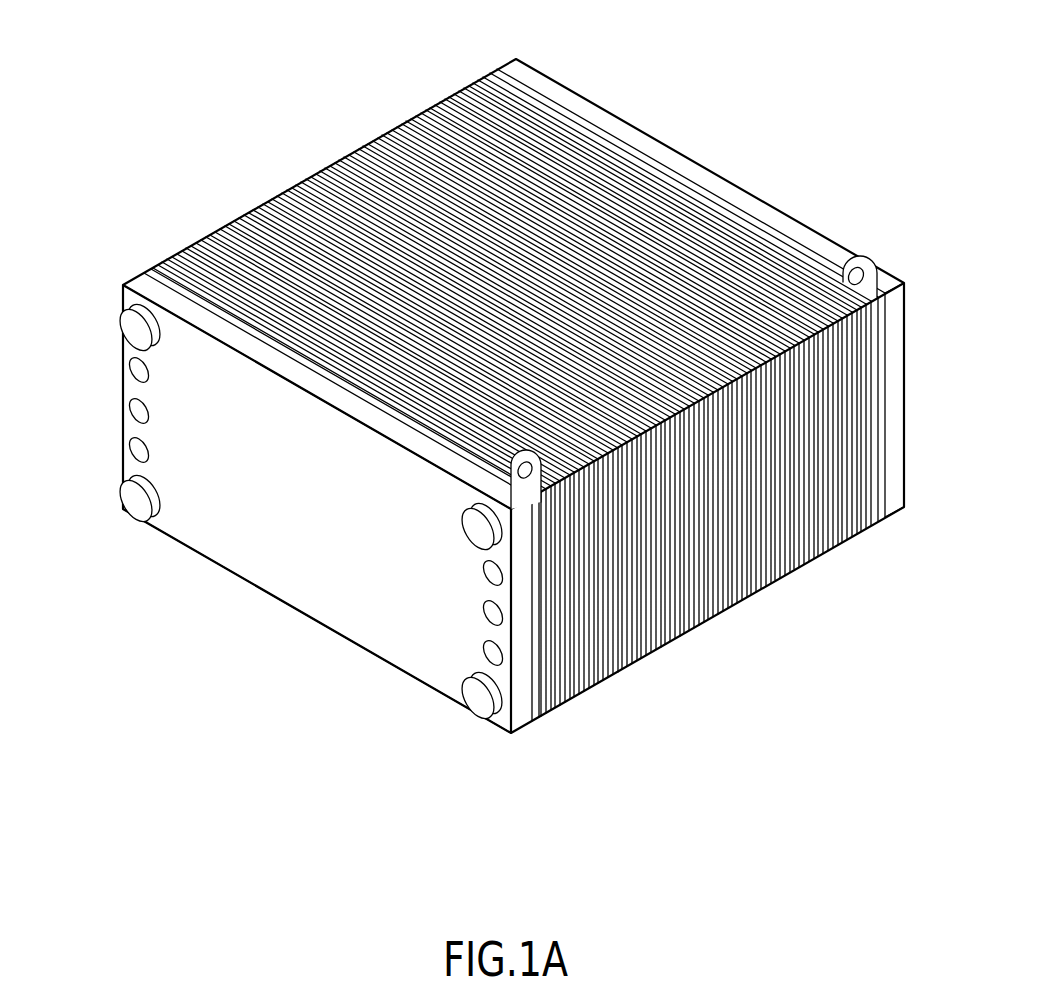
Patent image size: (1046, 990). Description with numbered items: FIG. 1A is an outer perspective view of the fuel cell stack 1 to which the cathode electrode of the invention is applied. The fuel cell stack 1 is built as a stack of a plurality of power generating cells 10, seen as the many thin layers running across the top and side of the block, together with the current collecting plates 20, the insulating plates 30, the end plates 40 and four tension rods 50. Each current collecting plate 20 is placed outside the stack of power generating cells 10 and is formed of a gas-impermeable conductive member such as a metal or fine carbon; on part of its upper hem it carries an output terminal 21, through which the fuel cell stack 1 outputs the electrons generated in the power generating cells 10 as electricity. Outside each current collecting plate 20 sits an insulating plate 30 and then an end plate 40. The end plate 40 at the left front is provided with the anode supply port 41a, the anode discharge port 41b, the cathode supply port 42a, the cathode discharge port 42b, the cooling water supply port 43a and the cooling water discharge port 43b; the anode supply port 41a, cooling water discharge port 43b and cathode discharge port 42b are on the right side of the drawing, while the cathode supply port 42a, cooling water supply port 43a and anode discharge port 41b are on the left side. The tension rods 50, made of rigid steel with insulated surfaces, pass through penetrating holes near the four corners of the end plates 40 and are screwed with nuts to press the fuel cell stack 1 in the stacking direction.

The fuel cell stack 1 is at (507, 392).
The power generating cell 10 is at (690, 625).
The current collecting plate 20 is at (534, 705).
The output terminal 21 is at (518, 440).
The insulating plate 30 is at (528, 714).
The end plate 40 is at (518, 707).
The anode supply port 41a is at (484, 566).
The anode discharge port 41b is at (131, 442).
The cathode supply port 42a is at (131, 362).
The cathode discharge port 42b is at (484, 646).
The cooling water supply port 43a is at (131, 403).
The cooling water discharge port 43b is at (484, 606).
The tension rod 50 is at (128, 322).